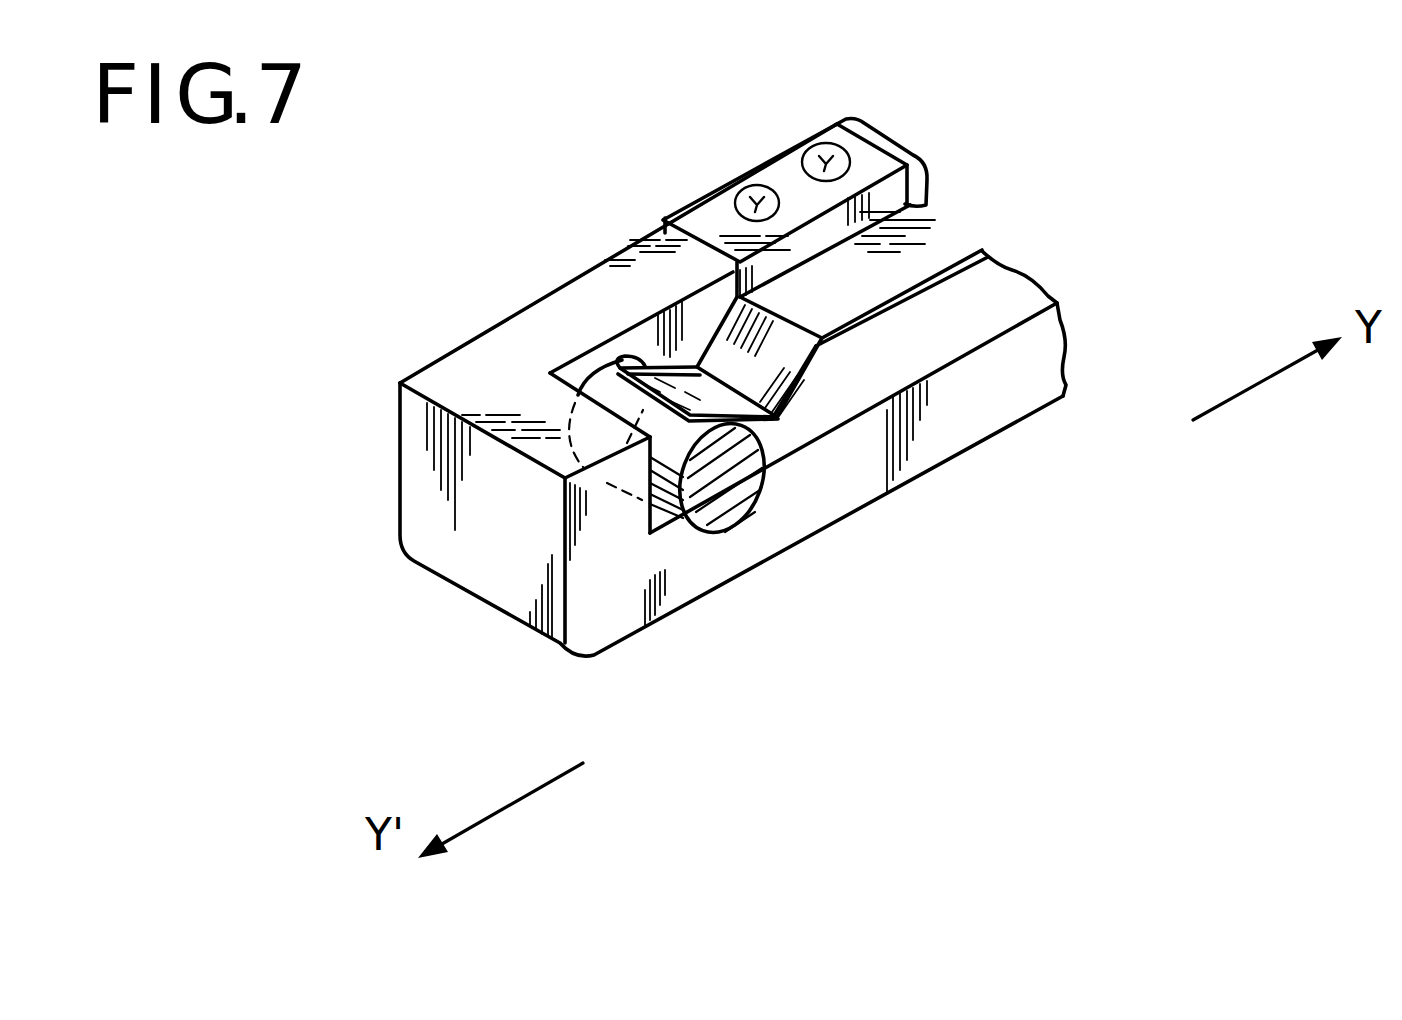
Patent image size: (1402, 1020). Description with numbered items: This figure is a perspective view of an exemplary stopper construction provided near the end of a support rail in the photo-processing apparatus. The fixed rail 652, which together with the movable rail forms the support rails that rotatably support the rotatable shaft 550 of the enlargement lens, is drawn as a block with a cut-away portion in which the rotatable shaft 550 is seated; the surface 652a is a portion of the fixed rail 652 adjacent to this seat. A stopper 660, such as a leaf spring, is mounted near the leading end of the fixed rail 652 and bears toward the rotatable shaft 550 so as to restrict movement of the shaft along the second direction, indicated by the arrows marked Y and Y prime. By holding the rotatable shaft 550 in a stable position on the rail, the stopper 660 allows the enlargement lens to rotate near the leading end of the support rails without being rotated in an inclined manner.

The fixed rail 652 is at (703, 553).
The ledge surface of holder block 652a is at (977, 315).
The rotatable shaft 550 is at (732, 503).
The stopper 660 is at (937, 242).